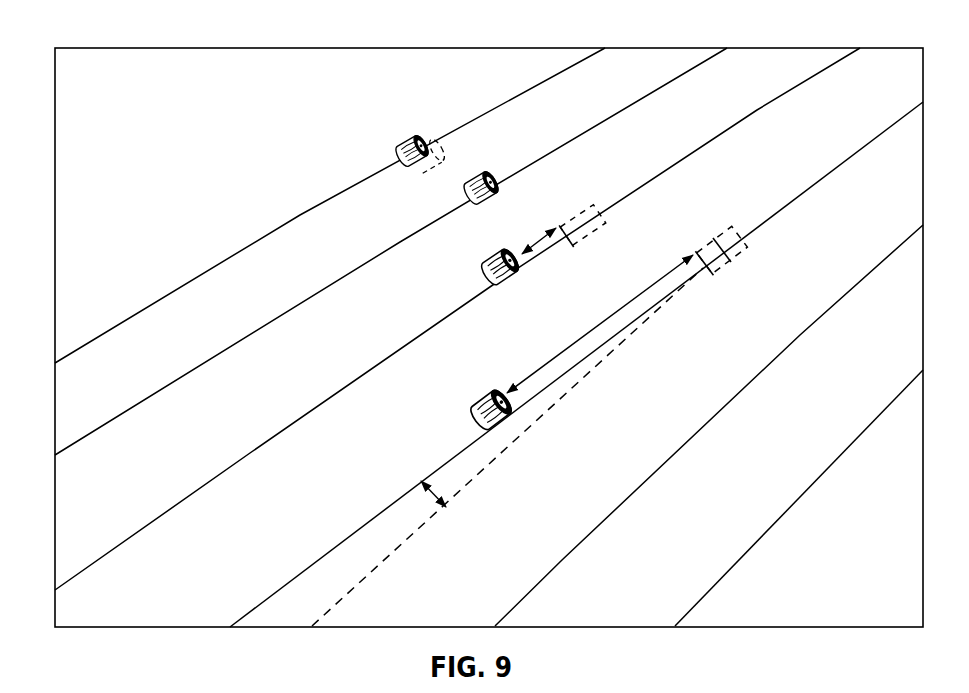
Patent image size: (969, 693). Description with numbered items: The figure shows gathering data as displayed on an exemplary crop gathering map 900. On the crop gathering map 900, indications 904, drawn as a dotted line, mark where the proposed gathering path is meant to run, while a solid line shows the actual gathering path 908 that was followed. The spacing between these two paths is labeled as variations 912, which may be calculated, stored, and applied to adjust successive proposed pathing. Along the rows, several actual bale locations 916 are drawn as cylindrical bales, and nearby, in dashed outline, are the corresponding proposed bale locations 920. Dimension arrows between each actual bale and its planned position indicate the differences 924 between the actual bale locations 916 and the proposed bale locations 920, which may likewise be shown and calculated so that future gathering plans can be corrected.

The crop gathering map 900 is at (157, 33).
The indications 904 is at (398, 556).
The actual gathering path 908 is at (296, 572).
The variations 912 is at (428, 487).
The actual bale locations 916 is at (379, 159).
The proposed bale locations 920 is at (437, 143).
The differences 924 is at (552, 231).